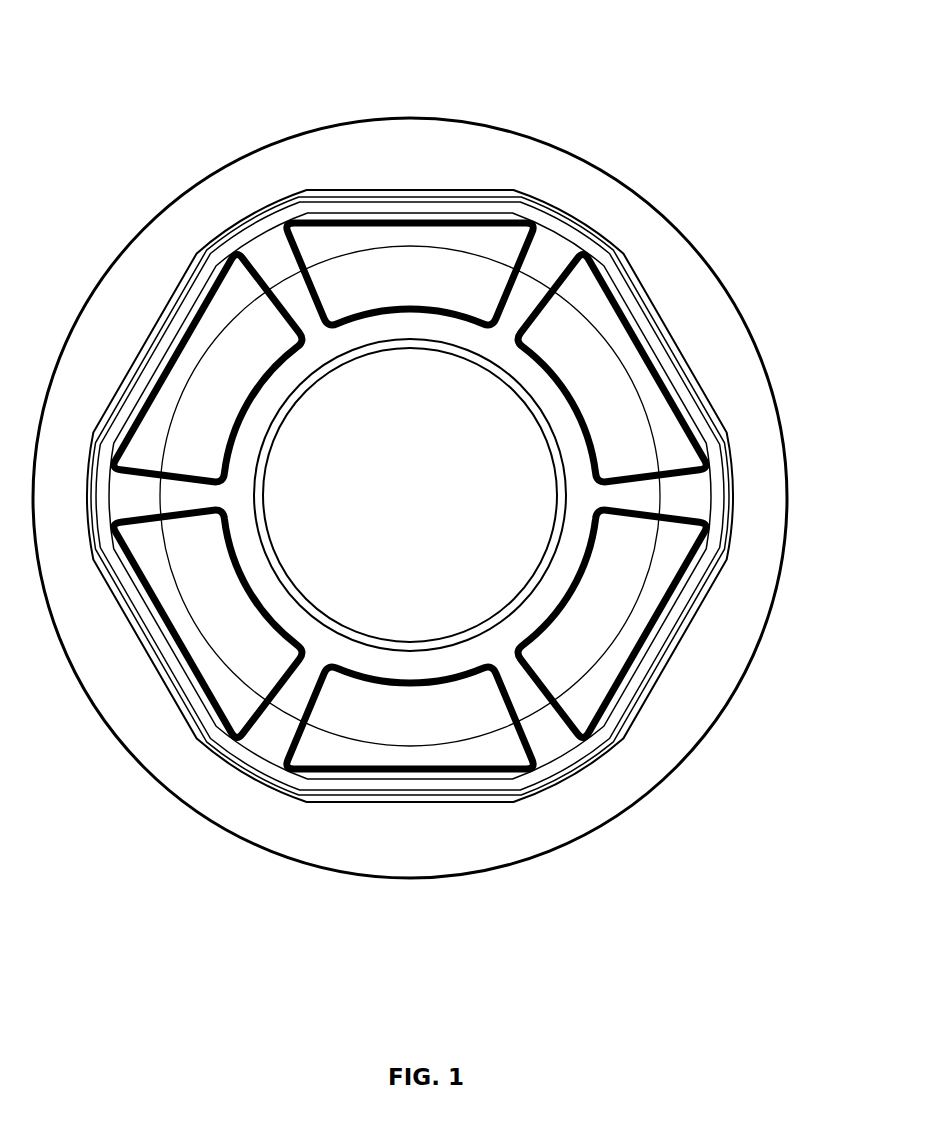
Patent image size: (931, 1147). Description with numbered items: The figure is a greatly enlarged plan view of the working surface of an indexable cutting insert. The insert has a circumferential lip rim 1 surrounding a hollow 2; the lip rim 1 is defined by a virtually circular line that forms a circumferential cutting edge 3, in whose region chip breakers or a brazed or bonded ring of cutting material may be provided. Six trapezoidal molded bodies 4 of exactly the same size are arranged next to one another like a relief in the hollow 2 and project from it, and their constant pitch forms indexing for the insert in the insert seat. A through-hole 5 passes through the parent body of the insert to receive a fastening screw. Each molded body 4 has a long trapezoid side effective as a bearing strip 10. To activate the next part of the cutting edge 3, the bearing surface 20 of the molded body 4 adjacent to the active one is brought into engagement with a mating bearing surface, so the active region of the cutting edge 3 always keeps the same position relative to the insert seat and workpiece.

The lip rim 1 is at (502, 167).
The hollow 2 is at (345, 710).
The cutting edge 3 is at (568, 152).
The molded bodies 4 is at (403, 289).
The through-hole 5 is at (403, 504).
The bearing strip 10 is at (227, 273).
The bearing surface 20 is at (377, 207).